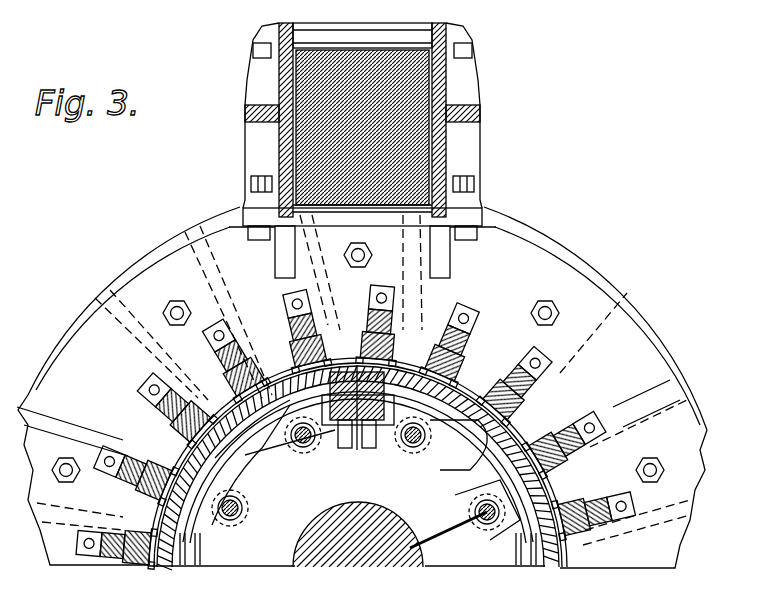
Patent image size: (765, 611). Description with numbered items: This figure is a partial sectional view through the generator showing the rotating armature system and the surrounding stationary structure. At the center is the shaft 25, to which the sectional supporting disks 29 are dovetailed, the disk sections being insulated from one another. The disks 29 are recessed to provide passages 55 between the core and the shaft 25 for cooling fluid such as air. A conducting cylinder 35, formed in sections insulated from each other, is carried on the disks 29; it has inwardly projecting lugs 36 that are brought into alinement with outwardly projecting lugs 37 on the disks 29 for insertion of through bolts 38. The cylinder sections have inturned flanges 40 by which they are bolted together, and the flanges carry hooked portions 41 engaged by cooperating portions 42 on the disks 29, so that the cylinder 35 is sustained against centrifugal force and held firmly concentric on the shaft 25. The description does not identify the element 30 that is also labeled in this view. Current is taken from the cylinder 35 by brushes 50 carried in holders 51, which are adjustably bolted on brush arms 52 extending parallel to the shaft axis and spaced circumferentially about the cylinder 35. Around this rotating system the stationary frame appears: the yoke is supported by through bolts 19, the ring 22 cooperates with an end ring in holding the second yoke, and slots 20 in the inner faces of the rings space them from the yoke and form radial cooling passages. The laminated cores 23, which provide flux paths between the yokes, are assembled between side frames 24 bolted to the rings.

The through bolt 19 is at (177, 306).
The slot 20 is at (642, 323).
The ring 22 is at (562, 268).
The core 23 is at (412, 78).
The side frame 24 is at (452, 148).
The shaft 25 is at (355, 550).
The supporting disk 29 is at (263, 560).
The lever 30 is at (462, 447).
The conducting cylinder 35 is at (358, 476).
The inwardly projecting lug 36 is at (232, 492).
The outwardly projecting lug 37 is at (230, 532).
The through bolt 38 is at (303, 448).
The inturned flange 40 is at (330, 400).
The hooked portion 41 is at (345, 448).
The cooperating portion 42 is at (369, 448).
The brush 50 is at (316, 330).
The brush holder 51 is at (450, 338).
The brush arm 52 is at (517, 380).
The passage 55 is at (442, 512).